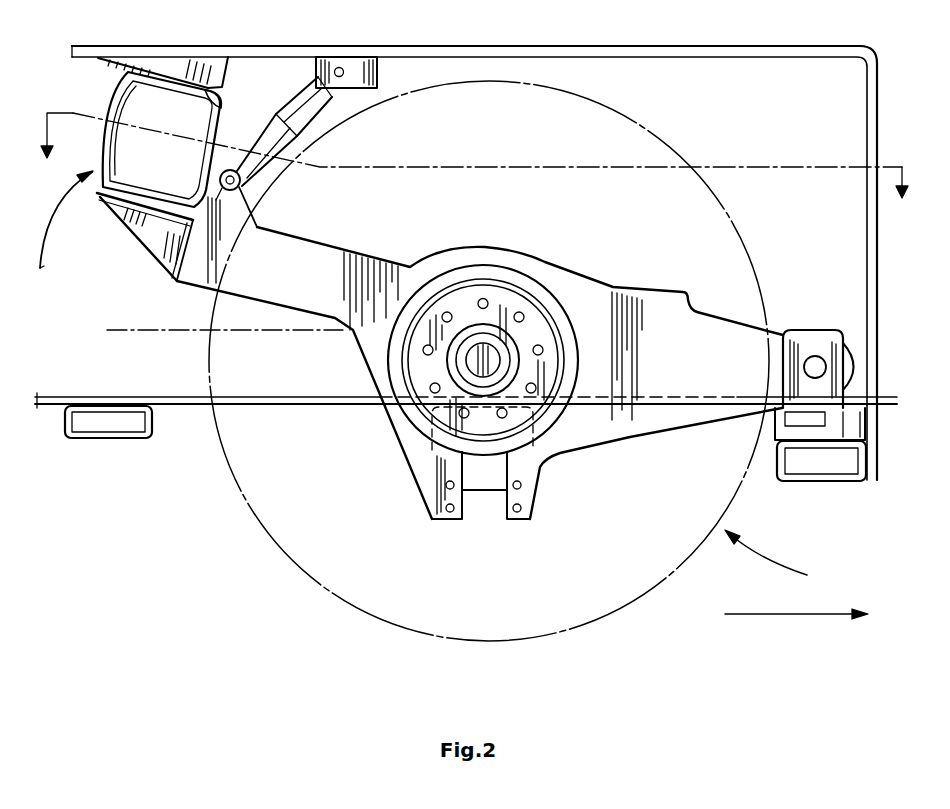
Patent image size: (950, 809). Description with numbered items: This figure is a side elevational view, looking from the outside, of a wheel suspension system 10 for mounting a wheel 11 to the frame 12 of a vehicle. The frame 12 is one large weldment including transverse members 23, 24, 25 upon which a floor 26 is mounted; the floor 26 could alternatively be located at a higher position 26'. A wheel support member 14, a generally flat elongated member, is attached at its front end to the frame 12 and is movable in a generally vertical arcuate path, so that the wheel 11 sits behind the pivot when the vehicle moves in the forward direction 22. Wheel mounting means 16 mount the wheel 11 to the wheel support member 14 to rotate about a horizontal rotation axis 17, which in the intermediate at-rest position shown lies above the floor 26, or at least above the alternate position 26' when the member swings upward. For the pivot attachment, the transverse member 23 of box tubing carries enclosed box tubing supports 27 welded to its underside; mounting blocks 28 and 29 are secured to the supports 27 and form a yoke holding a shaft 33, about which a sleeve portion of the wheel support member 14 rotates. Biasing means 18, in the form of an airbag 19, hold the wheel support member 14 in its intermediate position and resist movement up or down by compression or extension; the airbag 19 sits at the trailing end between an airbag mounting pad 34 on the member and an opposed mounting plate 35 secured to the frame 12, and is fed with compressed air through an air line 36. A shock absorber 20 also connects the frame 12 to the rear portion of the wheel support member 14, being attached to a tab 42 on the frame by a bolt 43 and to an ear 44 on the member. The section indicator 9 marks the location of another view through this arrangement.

The section line 9- 9 is at (475, 169).
The wheel suspension system 10 is at (778, 557).
The wheel 11 is at (408, 630).
The frame 12 is at (521, 46).
The wheel support member 14 is at (692, 313).
The wheel mounting means 16 is at (522, 316).
The rotation axis 17 is at (487, 358).
The biasing means 18 is at (53, 219).
The airbag 19 is at (124, 97).
The shock absorber 20 is at (264, 131).
The forward direction 22 is at (783, 615).
The transverse member 23 is at (778, 430).
The transverse member 24 is at (542, 455).
The transverse member 25 is at (103, 440).
The floor 26 is at (466, 433).
The alternate floor position 26' is at (200, 339).
The box tubing supports 27 is at (802, 482).
The mounting block 28 is at (850, 364).
The mounting block 29 is at (800, 328).
The shaft 33 is at (817, 360).
The airbag mounting pad 34 is at (130, 208).
The mounting plate 35 is at (222, 103).
The air line 36 is at (46, 268).
The tab 42 is at (362, 58).
The bolt 43 is at (338, 67).
The ear 44 is at (258, 227).